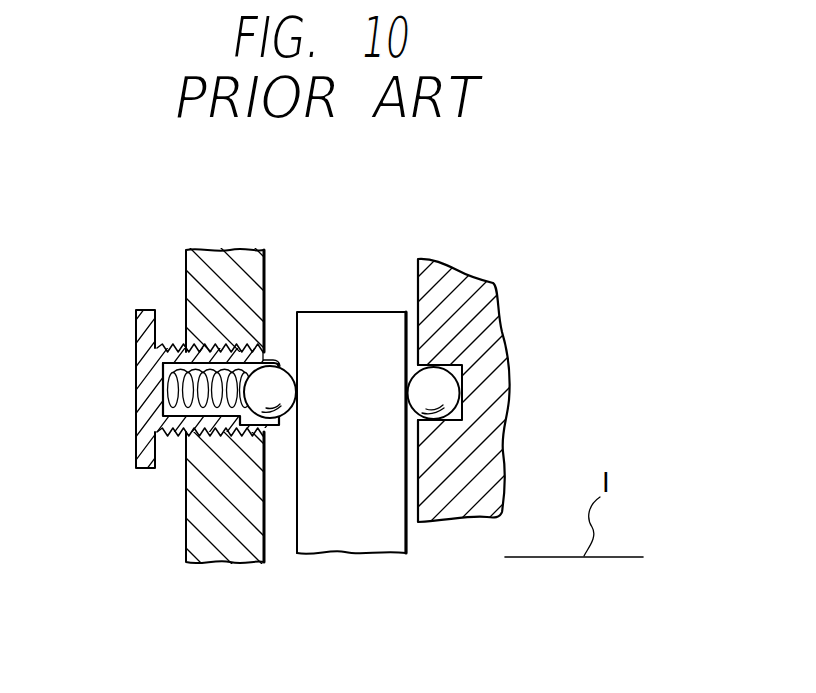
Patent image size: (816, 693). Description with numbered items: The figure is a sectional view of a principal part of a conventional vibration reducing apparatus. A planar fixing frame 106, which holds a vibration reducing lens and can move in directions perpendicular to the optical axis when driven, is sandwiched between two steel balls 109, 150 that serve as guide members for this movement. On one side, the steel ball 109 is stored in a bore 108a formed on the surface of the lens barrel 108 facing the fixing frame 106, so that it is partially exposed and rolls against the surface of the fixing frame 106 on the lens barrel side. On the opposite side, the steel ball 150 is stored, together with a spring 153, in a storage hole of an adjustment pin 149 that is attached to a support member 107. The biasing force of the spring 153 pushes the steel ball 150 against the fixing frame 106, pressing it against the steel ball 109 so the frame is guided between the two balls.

The fixing frame 106 is at (380, 540).
The support member 107 is at (207, 557).
The lens barrel 108 is at (481, 278).
The bore 108a is at (463, 364).
The steel ball 109 is at (450, 395).
The adjustment pin 149 is at (150, 390).
The steel ball 150 is at (291, 370).
The spring 153 is at (181, 407).